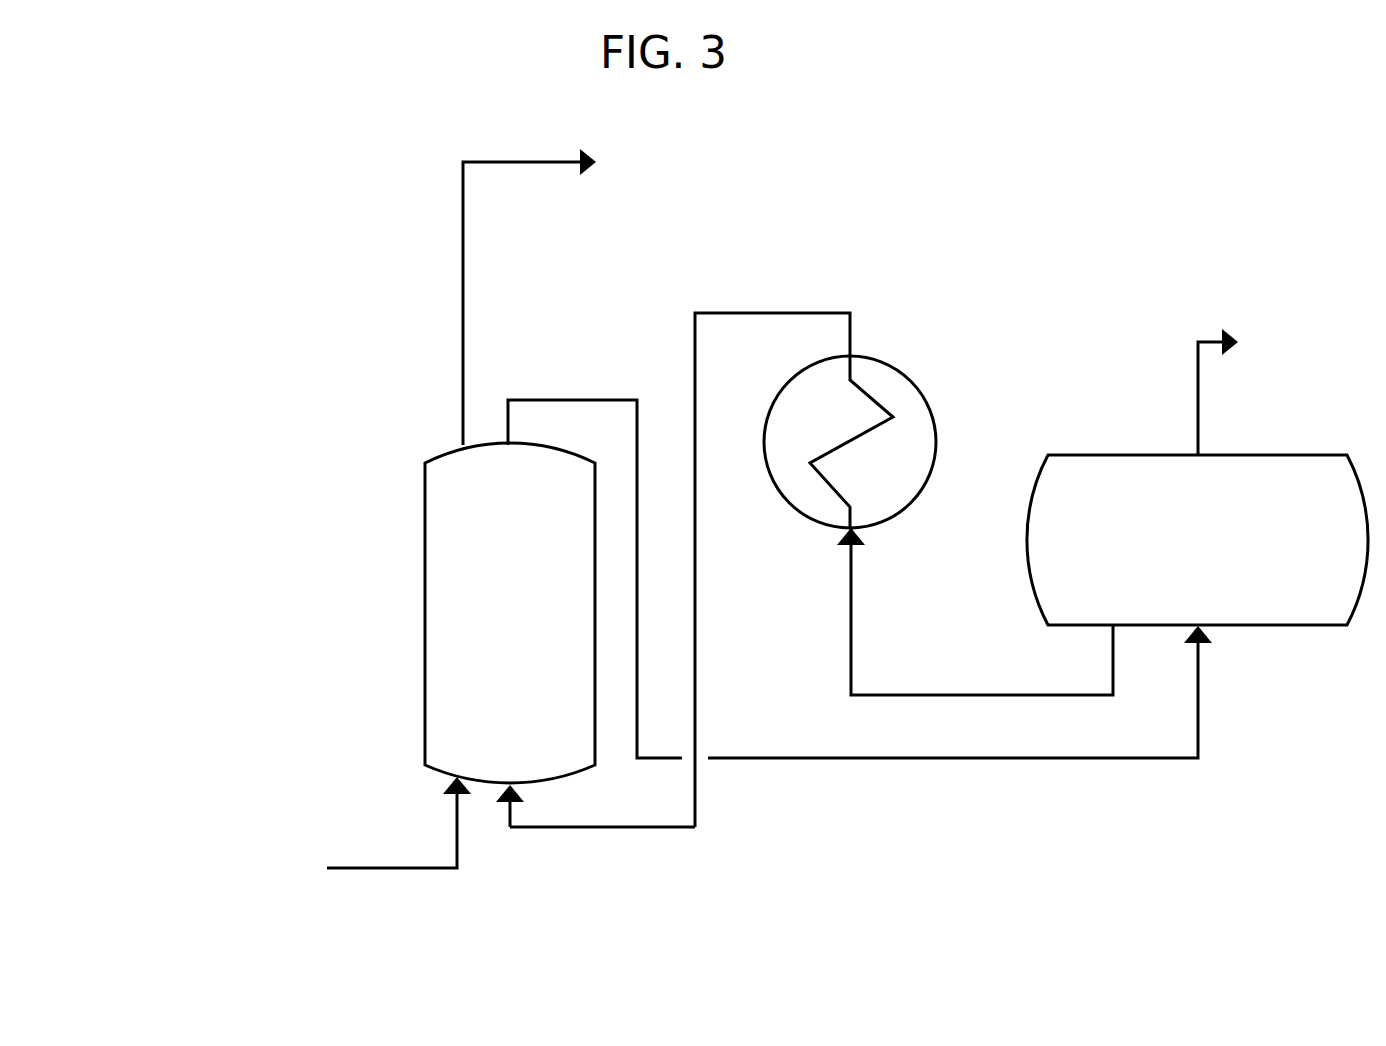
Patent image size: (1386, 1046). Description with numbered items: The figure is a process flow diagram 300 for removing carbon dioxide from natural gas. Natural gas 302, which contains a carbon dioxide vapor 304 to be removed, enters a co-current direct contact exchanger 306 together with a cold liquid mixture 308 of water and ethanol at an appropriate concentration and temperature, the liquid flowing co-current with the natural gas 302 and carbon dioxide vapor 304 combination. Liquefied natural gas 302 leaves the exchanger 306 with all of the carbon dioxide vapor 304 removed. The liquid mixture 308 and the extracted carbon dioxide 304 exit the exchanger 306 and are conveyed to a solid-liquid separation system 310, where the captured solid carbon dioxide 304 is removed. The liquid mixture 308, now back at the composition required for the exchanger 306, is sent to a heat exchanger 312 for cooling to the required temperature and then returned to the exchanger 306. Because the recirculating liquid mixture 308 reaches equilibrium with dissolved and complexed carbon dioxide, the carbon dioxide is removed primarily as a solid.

The process flow diagram 300 is at (249, 196).
The natural gas 302 is at (427, 516).
The carbon dioxide vapor 304 is at (1257, 390).
The co-current direct contact exchanger 306 is at (510, 613).
The liquid mixture 308 is at (854, 553).
The solid-liquid separation system 310 is at (1197, 540).
The heat exchanger 312 is at (877, 442).